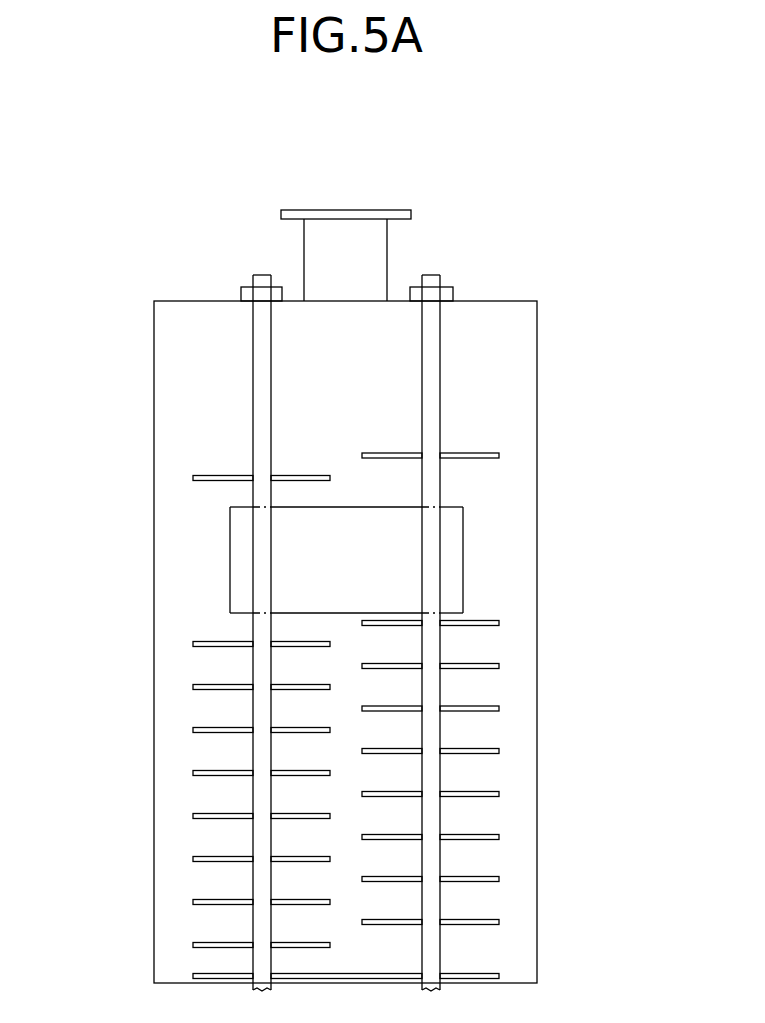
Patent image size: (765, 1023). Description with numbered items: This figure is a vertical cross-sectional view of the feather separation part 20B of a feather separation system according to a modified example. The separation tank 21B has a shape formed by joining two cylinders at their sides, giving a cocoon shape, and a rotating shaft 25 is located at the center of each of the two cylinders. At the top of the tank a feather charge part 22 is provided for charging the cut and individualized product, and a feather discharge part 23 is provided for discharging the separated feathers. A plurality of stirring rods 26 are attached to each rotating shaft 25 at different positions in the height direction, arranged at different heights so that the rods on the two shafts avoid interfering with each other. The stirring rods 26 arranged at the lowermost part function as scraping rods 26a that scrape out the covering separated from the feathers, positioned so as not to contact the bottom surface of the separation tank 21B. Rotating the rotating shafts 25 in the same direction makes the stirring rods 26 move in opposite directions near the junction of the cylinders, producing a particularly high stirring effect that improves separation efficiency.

The feather separation part 20B is at (540, 148).
The separation tank 21B is at (537, 330).
The feather charge part 22 is at (230, 557).
The feather discharge part 23 is at (387, 240).
The rotating shaft 25 is at (253, 369).
The stirring rods 26 is at (193, 478).
The scraping rods 26a is at (193, 975).